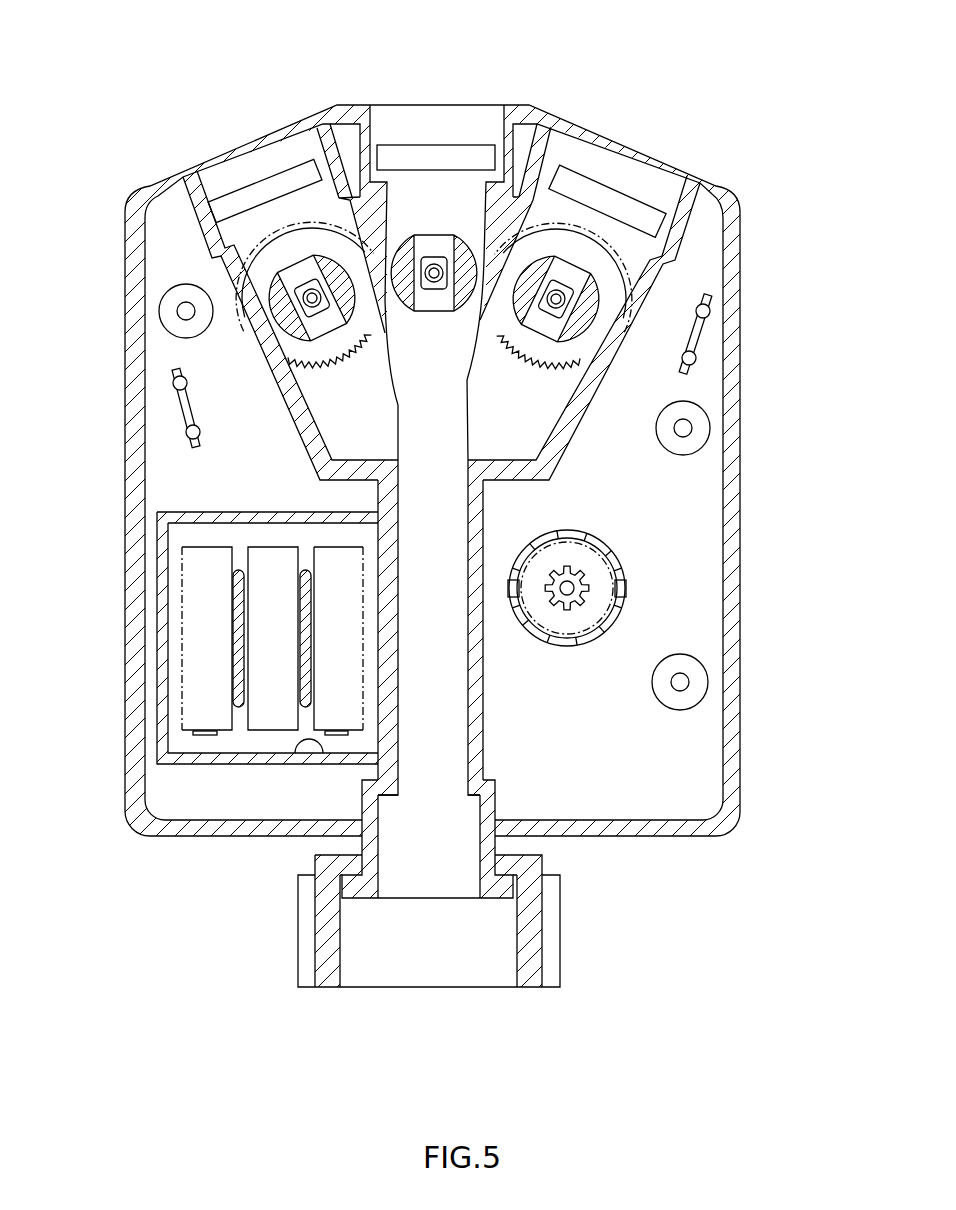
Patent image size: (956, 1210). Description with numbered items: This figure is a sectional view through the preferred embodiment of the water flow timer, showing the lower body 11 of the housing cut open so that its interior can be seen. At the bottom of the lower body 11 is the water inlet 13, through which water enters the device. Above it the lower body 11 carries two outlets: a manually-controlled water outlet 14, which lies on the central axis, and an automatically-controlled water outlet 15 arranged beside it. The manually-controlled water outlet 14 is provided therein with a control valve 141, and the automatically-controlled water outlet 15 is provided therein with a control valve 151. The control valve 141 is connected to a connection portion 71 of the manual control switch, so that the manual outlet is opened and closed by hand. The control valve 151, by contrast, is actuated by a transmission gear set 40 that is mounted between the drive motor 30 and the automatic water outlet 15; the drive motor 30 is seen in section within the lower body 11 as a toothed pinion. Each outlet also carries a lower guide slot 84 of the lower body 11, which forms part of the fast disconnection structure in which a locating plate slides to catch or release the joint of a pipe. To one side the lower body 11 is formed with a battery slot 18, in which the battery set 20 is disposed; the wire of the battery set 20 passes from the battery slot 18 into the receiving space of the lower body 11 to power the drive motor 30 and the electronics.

The lower body 11 is at (735, 593).
The water inlet 13 is at (433, 866).
The manually-controlled water outlet 14 is at (446, 195).
The control valve 141 is at (465, 305).
The automatically-controlled water outlet 15 is at (303, 217).
The battery slot 18 is at (300, 741).
The battery set 20 is at (198, 573).
The drive motor 30 is at (600, 613).
The transmission gear set 40 is at (298, 364).
The connection portion 71 is at (432, 290).
The lower guide slot 84 is at (237, 207).
The control valve 151 is at (298, 355).